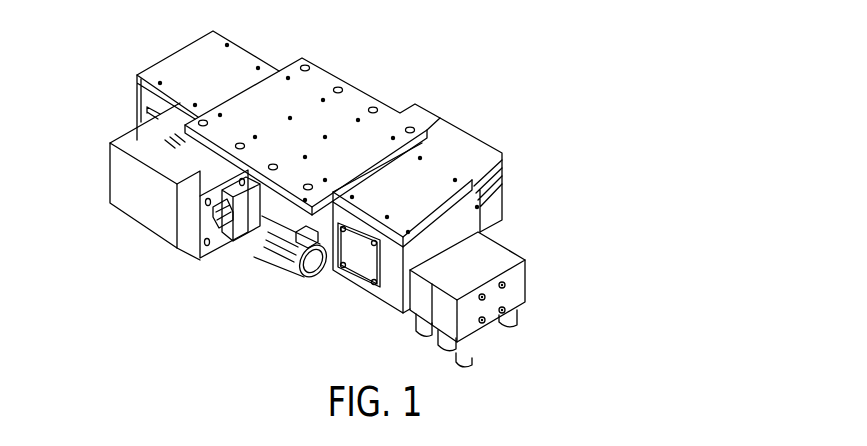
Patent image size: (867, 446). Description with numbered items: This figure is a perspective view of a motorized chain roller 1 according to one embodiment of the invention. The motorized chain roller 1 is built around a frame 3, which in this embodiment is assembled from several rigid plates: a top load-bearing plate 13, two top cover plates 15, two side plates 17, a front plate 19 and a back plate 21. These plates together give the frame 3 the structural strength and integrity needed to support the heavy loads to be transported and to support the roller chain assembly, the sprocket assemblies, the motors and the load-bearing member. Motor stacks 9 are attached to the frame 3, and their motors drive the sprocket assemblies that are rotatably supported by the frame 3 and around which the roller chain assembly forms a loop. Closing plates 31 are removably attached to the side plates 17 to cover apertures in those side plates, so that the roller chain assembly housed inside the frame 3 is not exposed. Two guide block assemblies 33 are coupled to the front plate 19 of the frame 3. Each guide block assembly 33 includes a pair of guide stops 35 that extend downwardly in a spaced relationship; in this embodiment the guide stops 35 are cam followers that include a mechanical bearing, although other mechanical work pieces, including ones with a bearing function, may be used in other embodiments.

The motorized chain roller 1 is at (516, 56).
The frame 3 is at (330, 66).
The motor stacks 9 is at (146, 200).
The top load-bearing plate 13 is at (347, 110).
The top cover plates 15 is at (175, 62).
The side plates 17 is at (327, 228).
The front plate 19 is at (475, 218).
The back plate 21 is at (136, 102).
The closing plates 31 is at (365, 268).
The guide block assemblies 33 is at (480, 248).
The guide stops 35 is at (455, 358).